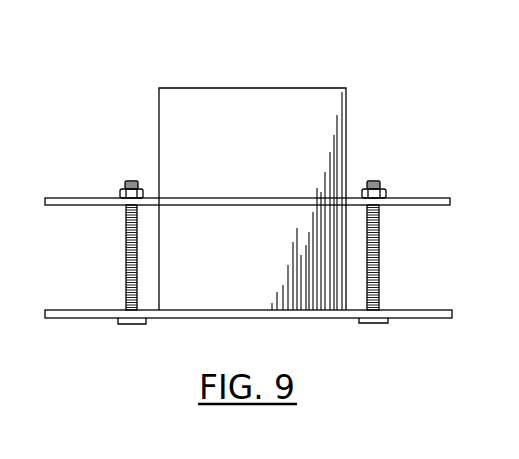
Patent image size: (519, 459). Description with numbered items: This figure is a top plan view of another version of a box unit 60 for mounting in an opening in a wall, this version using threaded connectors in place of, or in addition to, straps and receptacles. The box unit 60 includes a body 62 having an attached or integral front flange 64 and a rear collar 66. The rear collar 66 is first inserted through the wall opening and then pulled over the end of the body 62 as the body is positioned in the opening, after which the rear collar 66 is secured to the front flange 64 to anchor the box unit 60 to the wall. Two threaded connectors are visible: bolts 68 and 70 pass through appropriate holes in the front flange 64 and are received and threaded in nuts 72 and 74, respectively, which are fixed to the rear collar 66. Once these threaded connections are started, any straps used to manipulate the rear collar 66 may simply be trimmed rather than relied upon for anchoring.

The box unit 60 is at (114, 82).
The body 62 is at (332, 108).
The front flange 64 is at (412, 316).
The rear collar 66 is at (427, 203).
The bolt 68 is at (126, 256).
The bolt 70 is at (379, 262).
The nut 72 is at (120, 193).
The nut 74 is at (385, 193).